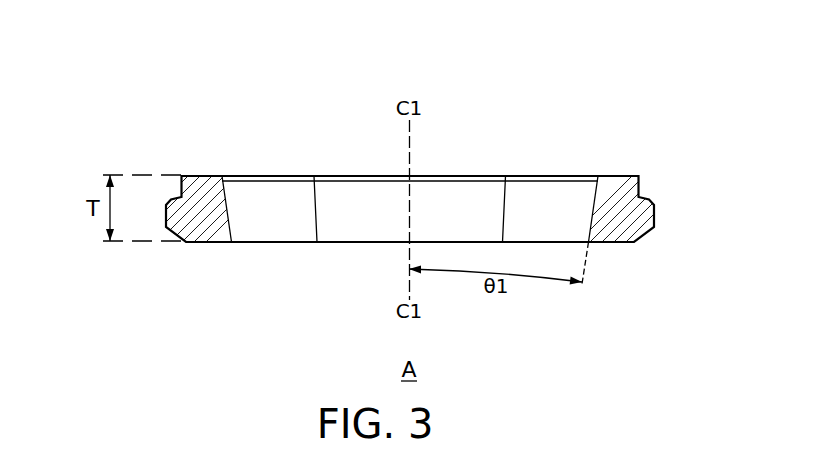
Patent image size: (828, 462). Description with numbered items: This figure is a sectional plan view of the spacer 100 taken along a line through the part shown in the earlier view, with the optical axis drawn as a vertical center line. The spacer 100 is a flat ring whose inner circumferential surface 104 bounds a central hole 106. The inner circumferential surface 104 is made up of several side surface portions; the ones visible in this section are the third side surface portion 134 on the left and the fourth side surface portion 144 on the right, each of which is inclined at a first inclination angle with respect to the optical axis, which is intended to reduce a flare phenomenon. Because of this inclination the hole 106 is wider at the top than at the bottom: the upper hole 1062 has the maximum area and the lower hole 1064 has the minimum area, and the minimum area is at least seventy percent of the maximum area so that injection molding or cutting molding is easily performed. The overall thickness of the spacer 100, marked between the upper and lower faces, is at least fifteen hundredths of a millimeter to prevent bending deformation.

The spacer 100 is at (480, 145).
The inner circumferential surface 104 is at (574, 203).
The fourth side surface portion 144 is at (644, 180).
The third side surface portion 134 is at (230, 205).
The hole 106 is at (410, 210).
The upper hole 1062 is at (300, 173).
The lower hole 1064 is at (302, 247).